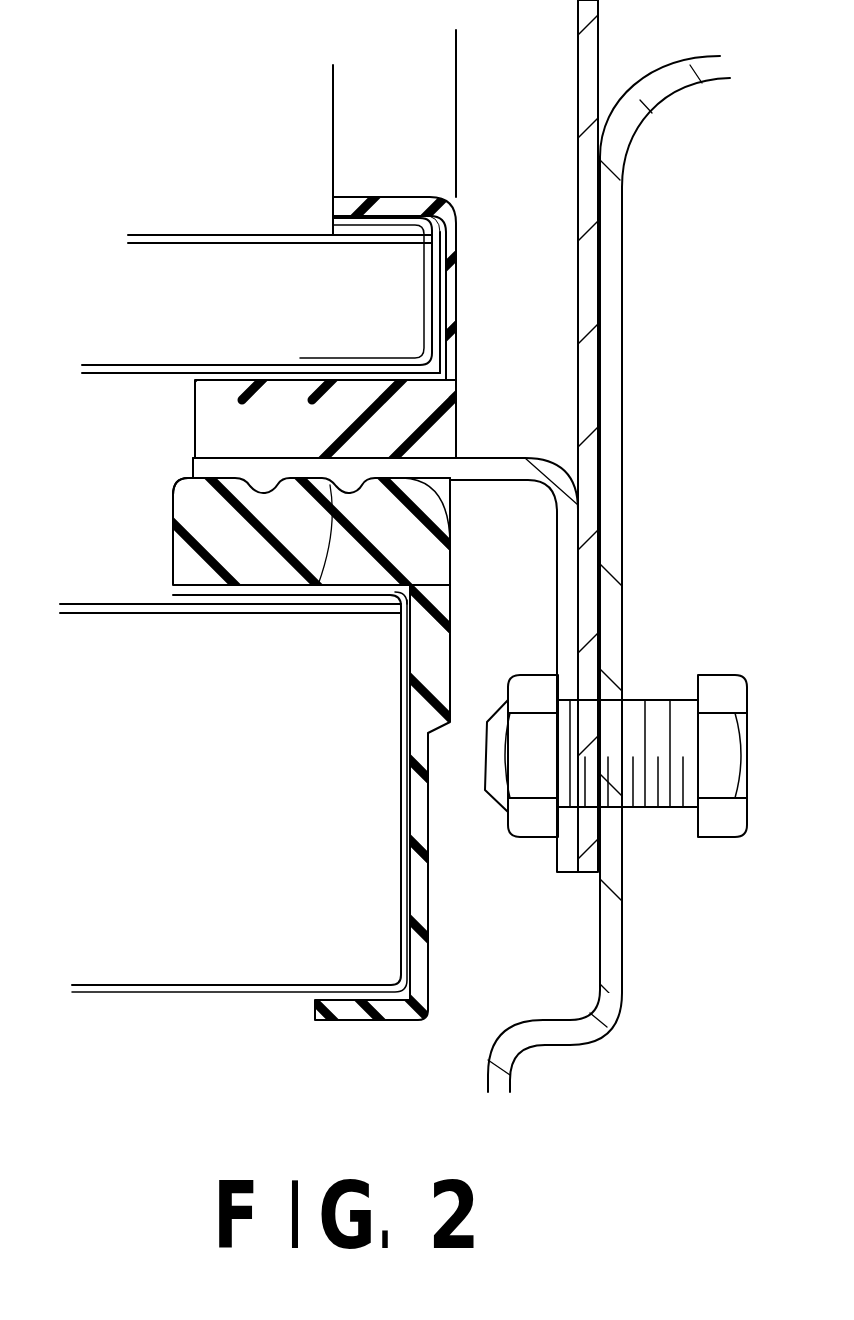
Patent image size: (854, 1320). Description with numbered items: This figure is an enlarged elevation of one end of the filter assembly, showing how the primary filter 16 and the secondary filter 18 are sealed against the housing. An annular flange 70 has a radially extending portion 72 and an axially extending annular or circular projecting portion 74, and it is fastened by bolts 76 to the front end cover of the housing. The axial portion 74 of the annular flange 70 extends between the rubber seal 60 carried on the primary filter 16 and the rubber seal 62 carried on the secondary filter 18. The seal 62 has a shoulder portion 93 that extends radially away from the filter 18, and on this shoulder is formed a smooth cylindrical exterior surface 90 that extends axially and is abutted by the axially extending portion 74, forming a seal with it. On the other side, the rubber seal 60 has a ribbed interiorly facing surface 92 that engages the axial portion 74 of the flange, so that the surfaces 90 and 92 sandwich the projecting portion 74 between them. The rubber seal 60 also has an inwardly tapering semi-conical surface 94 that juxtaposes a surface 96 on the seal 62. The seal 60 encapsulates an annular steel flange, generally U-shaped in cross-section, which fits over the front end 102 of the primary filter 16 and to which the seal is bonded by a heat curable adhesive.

The primary filter 16 is at (150, 952).
The secondary filter 18 is at (170, 268).
The rubber seal 60 is at (183, 552).
The rubber seal 62 is at (195, 410).
The annular flange 70 is at (539, 450).
The radially extending portion 72 is at (575, 578).
The axially extending annular projecting portion 74 is at (458, 470).
The bolts 76 is at (652, 698).
The smooth cylindrical exterior surface 90 is at (400, 446).
The ribbed interiorly facing surface 92 is at (330, 520).
The shoulder portion 93 is at (283, 402).
The inwardly tapering semi-conical surface 94 is at (175, 482).
The surface 96 is at (193, 470).
The front end 102 is at (415, 885).